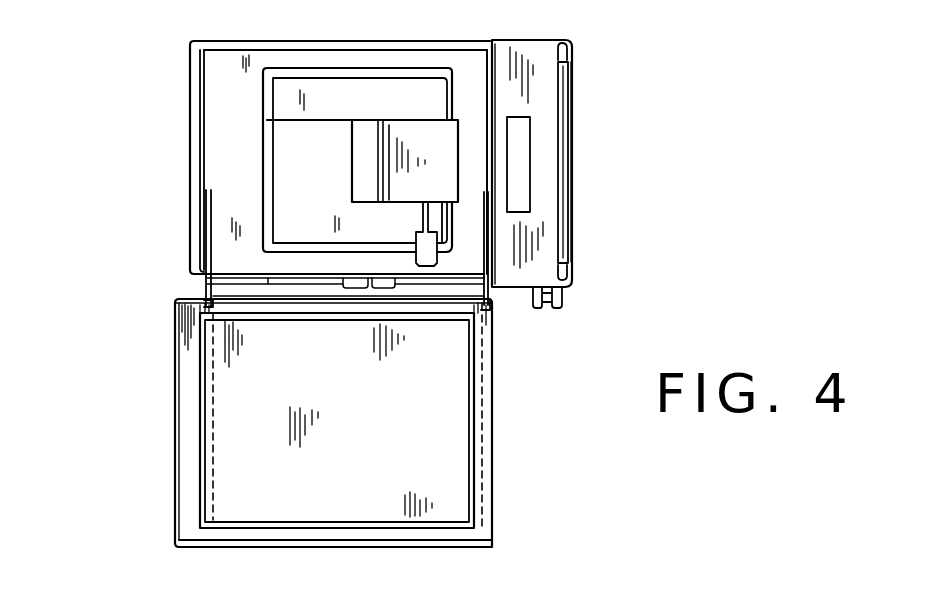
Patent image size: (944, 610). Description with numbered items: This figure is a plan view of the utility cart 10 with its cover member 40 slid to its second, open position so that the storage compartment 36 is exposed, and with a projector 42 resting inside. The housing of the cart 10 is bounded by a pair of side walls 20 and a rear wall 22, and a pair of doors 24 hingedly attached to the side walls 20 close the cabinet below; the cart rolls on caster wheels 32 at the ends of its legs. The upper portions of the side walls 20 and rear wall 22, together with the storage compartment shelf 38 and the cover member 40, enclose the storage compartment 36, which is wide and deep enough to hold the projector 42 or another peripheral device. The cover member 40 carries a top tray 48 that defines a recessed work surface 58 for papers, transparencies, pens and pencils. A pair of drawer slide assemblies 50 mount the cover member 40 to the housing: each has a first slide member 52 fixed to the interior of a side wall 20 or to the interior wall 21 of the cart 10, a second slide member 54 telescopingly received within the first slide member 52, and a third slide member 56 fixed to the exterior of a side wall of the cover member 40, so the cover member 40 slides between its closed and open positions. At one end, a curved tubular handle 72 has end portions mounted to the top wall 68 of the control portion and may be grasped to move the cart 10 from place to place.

The utility cart 10 is at (163, 48).
The side walls 20 is at (188, 144).
The interior wall 21 is at (488, 72).
The rear wall 22 is at (225, 41).
The doors 24 is at (268, 283).
The caster wheels 32 is at (563, 298).
The storage compartment 36 is at (231, 83).
The storage compartment shelf 38 is at (247, 168).
The cover member 40 is at (168, 423).
The projector 42 is at (355, 61).
The top tray 48 is at (492, 525).
The drawer slide assemblies 50 is at (188, 304).
The first slide member 52 is at (207, 218).
The second slide member 54 is at (203, 288).
The third slide member 56 is at (208, 472).
The work surface 58 is at (400, 408).
The top wall 68 is at (540, 40).
The handle 72 is at (563, 92).